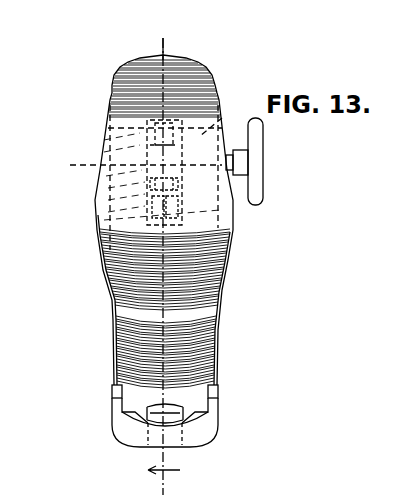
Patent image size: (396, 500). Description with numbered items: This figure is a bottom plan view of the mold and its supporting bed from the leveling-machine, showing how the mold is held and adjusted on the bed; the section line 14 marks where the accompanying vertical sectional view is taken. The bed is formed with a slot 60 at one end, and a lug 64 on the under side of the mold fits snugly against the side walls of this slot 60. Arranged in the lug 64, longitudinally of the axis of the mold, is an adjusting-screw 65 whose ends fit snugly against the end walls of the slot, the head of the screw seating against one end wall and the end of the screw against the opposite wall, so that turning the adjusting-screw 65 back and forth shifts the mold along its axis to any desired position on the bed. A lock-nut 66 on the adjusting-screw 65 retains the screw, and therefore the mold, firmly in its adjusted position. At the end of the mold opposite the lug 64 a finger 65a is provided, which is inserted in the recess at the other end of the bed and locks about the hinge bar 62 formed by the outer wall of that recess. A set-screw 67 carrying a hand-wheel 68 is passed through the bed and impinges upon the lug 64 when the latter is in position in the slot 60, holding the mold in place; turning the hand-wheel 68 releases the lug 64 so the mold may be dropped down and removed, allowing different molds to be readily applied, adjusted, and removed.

The section line 14 is at (163, 260).
The slot 60 is at (110, 123).
The hinge bar 62 is at (135, 437).
The lug 64 is at (131, 147).
The adjusting-screw 65 is at (200, 222).
The finger 65a is at (195, 432).
The lock-nut 66 is at (173, 185).
The set-screw 67 is at (222, 118).
The hand-wheel 68 is at (262, 160).